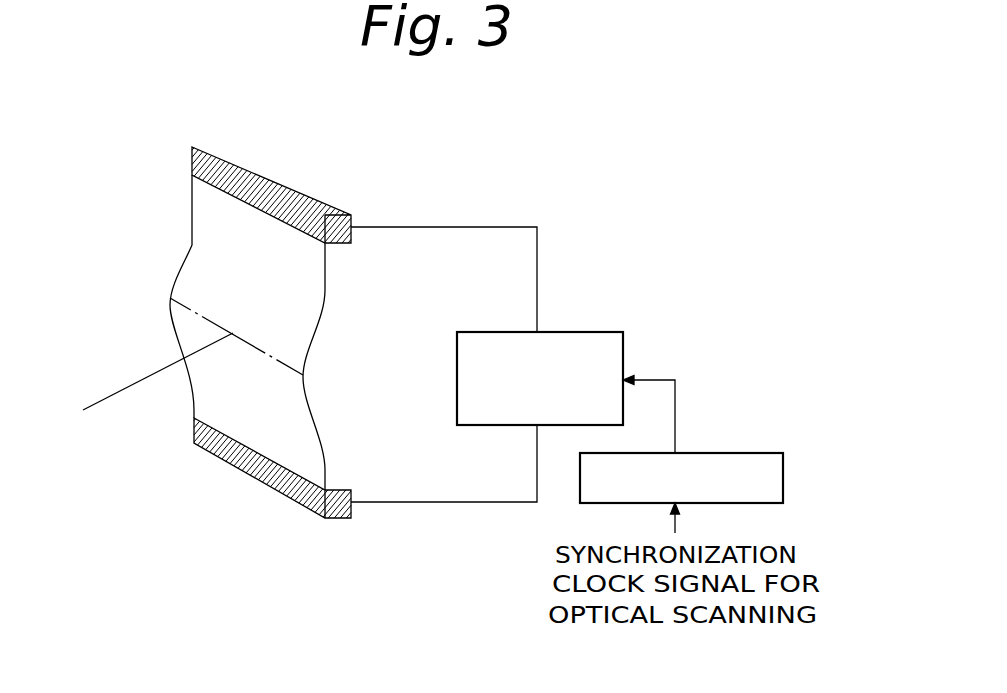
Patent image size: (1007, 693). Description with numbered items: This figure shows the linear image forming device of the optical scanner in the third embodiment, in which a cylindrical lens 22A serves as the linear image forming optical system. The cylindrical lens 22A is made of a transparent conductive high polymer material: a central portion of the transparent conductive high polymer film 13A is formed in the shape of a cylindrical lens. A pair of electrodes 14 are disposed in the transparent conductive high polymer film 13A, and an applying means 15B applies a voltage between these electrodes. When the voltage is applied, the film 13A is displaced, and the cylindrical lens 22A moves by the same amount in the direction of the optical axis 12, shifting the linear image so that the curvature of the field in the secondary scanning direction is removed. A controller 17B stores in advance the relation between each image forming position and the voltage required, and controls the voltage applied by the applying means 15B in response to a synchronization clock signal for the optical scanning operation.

The optical axis 12 is at (123, 392).
The transparent conductive high polymer film 13A is at (266, 332).
The electrodes 14 is at (295, 186).
The applying means 15B is at (583, 330).
The controller 17B is at (727, 452).
The cylindrical lens 22A is at (188, 256).